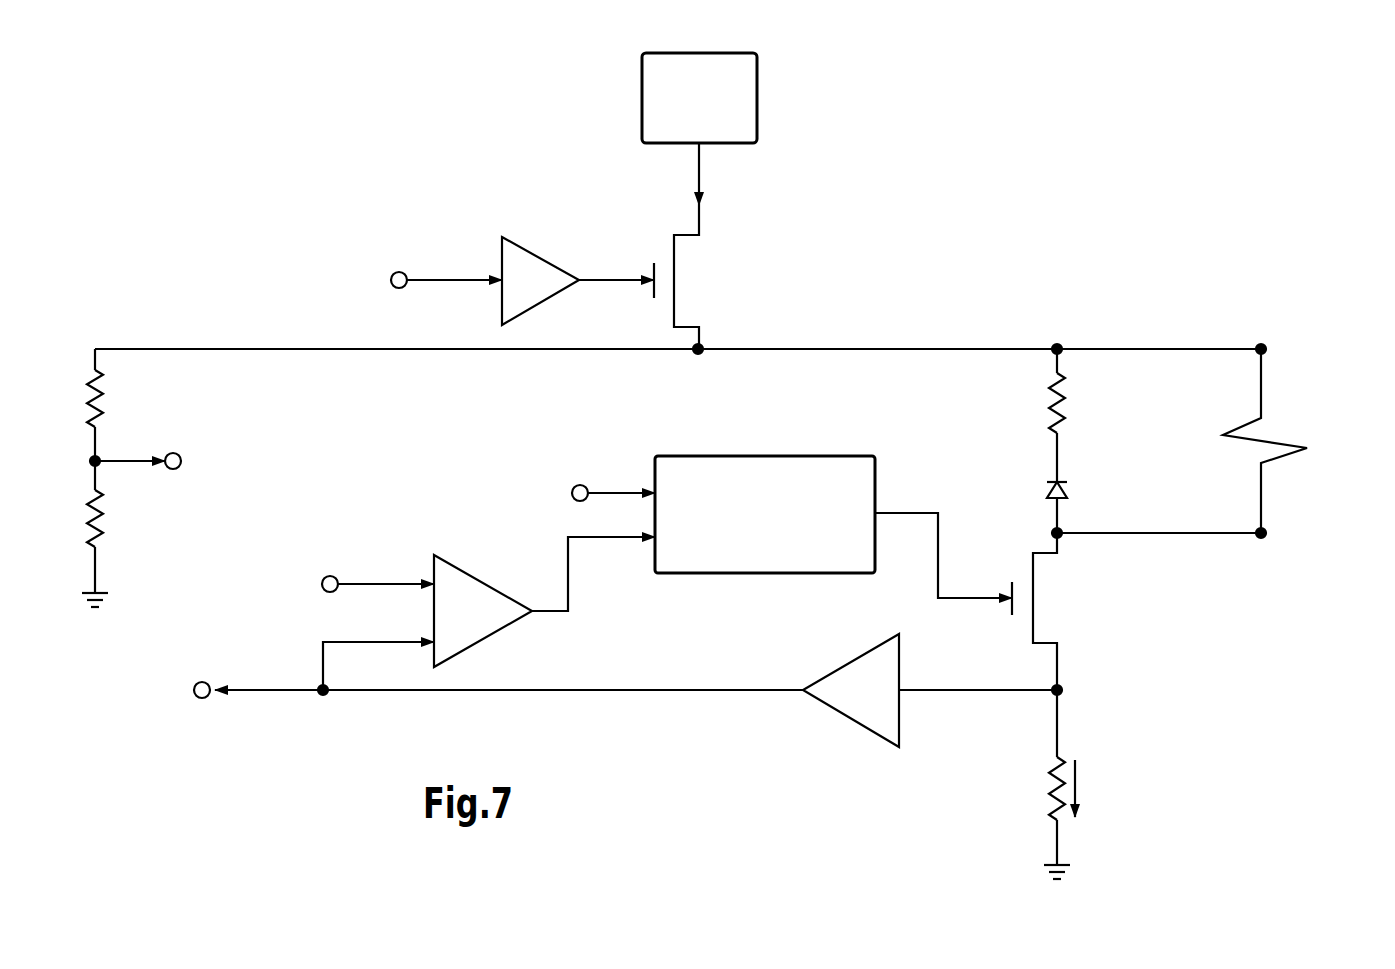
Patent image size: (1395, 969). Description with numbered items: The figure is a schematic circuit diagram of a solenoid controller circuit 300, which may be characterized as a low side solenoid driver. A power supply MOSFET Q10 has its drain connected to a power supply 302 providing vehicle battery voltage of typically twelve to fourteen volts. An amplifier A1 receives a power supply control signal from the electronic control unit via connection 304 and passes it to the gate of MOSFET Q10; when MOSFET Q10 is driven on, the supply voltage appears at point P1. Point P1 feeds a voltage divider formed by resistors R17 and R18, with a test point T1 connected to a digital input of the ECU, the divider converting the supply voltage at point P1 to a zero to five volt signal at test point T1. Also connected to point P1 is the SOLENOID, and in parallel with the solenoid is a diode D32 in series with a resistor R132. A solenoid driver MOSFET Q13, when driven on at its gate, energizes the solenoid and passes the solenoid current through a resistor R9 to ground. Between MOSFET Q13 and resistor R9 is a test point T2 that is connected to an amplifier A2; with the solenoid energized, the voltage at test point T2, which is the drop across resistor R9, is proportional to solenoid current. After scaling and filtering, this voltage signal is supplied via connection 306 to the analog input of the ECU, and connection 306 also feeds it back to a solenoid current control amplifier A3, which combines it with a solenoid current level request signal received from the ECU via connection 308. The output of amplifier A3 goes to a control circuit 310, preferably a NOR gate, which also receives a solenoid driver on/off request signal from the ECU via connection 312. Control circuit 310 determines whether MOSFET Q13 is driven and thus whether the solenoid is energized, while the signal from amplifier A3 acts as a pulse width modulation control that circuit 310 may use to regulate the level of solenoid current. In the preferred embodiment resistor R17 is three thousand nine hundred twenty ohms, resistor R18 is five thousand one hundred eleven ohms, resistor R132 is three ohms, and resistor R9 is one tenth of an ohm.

The solenoid controller circuit 300 is at (948, 182).
The power supply 302 is at (757, 98).
The connection 304 is at (439, 278).
The connection 306 is at (633, 690).
The connection 308 is at (378, 582).
The control circuit 310 is at (853, 467).
The connection 312 is at (609, 491).
The point P1 is at (698, 349).
The test point T1 is at (95, 461).
The test point T2 is at (1062, 689).
The power supply MOSFET Q10 is at (690, 277).
The solenoid driver MOSFET Q13 is at (1052, 611).
The amplifier A1 is at (578, 281).
The amplifier A2 is at (851, 690).
The solenoid current control amplifier A3 is at (486, 616).
The resistor R17 is at (123, 405).
The resistor R18 is at (121, 534).
The resistor R132 is at (1094, 413).
The resistor R9 is at (1044, 784).
The diode D32 is at (1087, 507).
The solenoid SOLENOID is at (1220, 441).